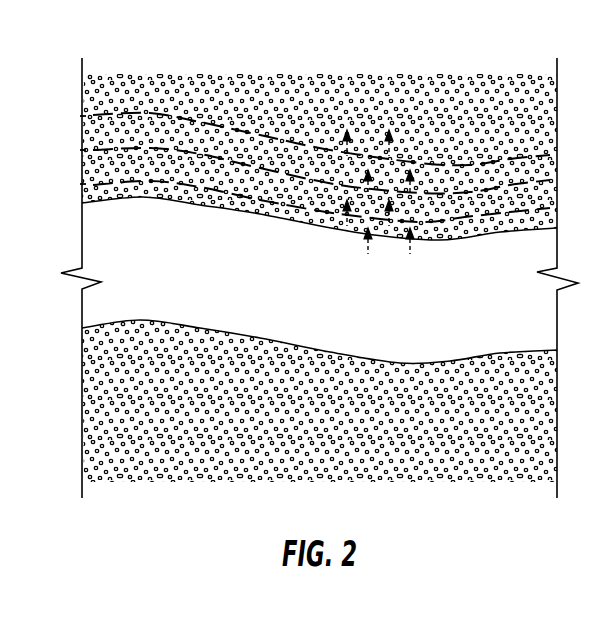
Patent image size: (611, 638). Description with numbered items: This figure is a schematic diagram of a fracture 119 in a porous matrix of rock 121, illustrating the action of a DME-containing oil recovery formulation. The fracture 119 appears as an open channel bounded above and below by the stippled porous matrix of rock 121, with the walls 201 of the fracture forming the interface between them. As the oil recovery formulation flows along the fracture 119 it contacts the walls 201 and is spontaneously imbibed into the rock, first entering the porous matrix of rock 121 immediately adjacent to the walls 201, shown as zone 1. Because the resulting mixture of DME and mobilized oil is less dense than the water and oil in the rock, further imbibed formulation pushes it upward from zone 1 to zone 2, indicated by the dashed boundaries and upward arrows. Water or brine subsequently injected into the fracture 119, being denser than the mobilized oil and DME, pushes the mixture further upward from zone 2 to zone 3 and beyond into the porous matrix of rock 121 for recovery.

The porous matrix of rock 121 is at (474, 80).
The walls of the fracture 201 is at (450, 238).
The fracture 119 is at (207, 276).
The zone 1 is at (95, 194).
The zone 2 is at (95, 167).
The zone 3 is at (95, 133).